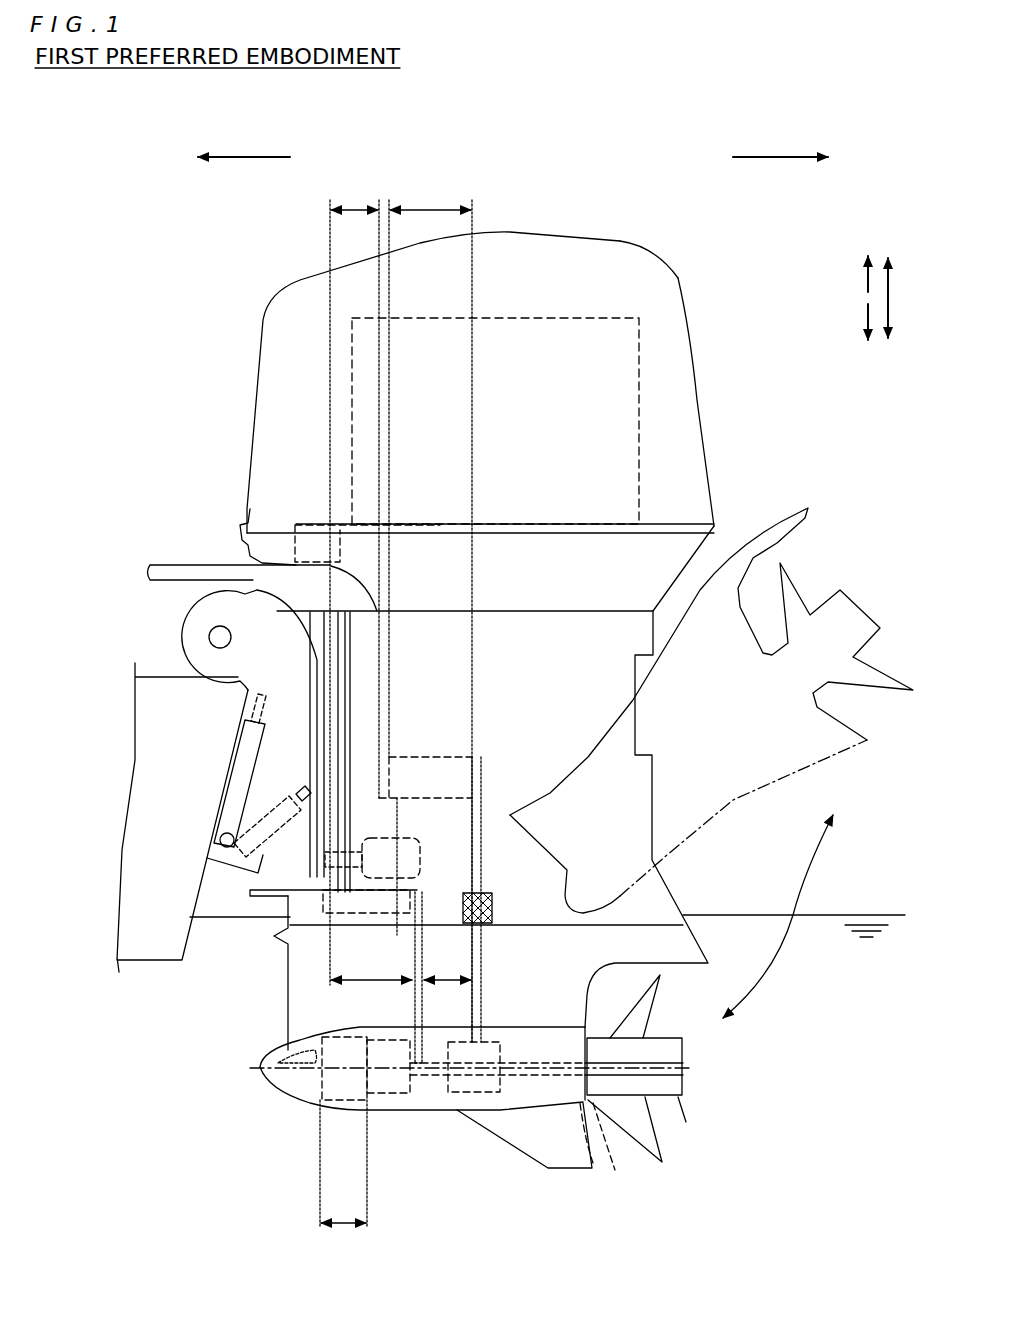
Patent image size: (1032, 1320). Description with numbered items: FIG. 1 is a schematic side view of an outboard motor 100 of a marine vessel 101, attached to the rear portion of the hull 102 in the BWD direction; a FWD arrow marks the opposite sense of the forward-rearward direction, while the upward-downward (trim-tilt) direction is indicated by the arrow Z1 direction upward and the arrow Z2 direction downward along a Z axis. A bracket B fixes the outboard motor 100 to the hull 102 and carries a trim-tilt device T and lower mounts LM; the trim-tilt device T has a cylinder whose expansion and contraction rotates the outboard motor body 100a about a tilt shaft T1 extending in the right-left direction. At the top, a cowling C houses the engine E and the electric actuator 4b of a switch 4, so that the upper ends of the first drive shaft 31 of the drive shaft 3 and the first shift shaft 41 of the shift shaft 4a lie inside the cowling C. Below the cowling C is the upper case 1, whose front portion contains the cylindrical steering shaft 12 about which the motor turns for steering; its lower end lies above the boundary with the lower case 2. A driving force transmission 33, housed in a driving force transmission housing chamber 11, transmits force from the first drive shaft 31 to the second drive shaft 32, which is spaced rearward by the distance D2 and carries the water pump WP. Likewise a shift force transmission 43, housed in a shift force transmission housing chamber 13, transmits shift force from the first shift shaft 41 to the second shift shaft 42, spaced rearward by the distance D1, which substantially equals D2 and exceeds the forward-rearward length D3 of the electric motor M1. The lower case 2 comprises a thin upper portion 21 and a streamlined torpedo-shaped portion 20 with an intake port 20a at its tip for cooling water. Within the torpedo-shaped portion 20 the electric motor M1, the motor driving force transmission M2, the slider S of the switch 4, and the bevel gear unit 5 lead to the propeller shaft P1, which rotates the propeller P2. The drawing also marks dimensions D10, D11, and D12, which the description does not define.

The marine vessel 101 is at (113, 165).
The outboard motor 100 is at (714, 240).
The outboard motor body 100a is at (703, 334).
The cowling C is at (658, 268).
The engine E is at (600, 318).
The upper case 1 is at (640, 716).
The lower case 2 is at (860, 748).
The drive shaft 3 is at (396, 586).
The switch 4 is at (300, 497).
The shift shaft 4a is at (308, 589).
The electric actuator 4b is at (292, 530).
The bracket B is at (178, 606).
The tilt shaft T1 is at (208, 637).
The trim-tilt device T is at (215, 783).
The hull 102 is at (135, 703).
The steering shaft 12 is at (338, 668).
The first shift shaft 41 is at (327, 708).
The first drive shaft 31 is at (390, 707).
The driving force transmission housing chamber 11 is at (462, 757).
The driving force transmission 33 is at (450, 763).
The lower mounts LM is at (405, 856).
The shift force transmission 43 is at (412, 890).
The water pump WP is at (494, 900).
The shift force transmission housing chamber 13 is at (366, 922).
The upper portion 21 is at (288, 982).
The second shift shaft 42 is at (424, 1010).
The second drive shaft 32 is at (486, 1004).
The torpedo-shaped portion 20 is at (262, 1064).
The intake port 20a is at (282, 1053).
The electric motor M1 is at (323, 1092).
The motor driving force transmission M2 is at (395, 1095).
The slider S is at (435, 1077).
The bevel gear unit 5 is at (470, 1095).
The propeller shaft P1 is at (610, 1135).
The propeller P2 is at (676, 1100).
The rearward separation distance of second shift shaft D1 is at (371, 967).
The rearward separation distance of second drive shaft D2 is at (430, 611).
The length of electric motor D3 is at (343, 1164).
The distance D10 is at (356, 583).
The distance D11 is at (448, 967).
The distance D12 is at (422, 866).
The forward direction FWD is at (244, 139).
The BWD direction BWD is at (780, 139).
The vertical direction Z is at (904, 298).
The arrow Z1 direction Z1 is at (850, 274).
The arrow Z2 direction Z2 is at (850, 322).